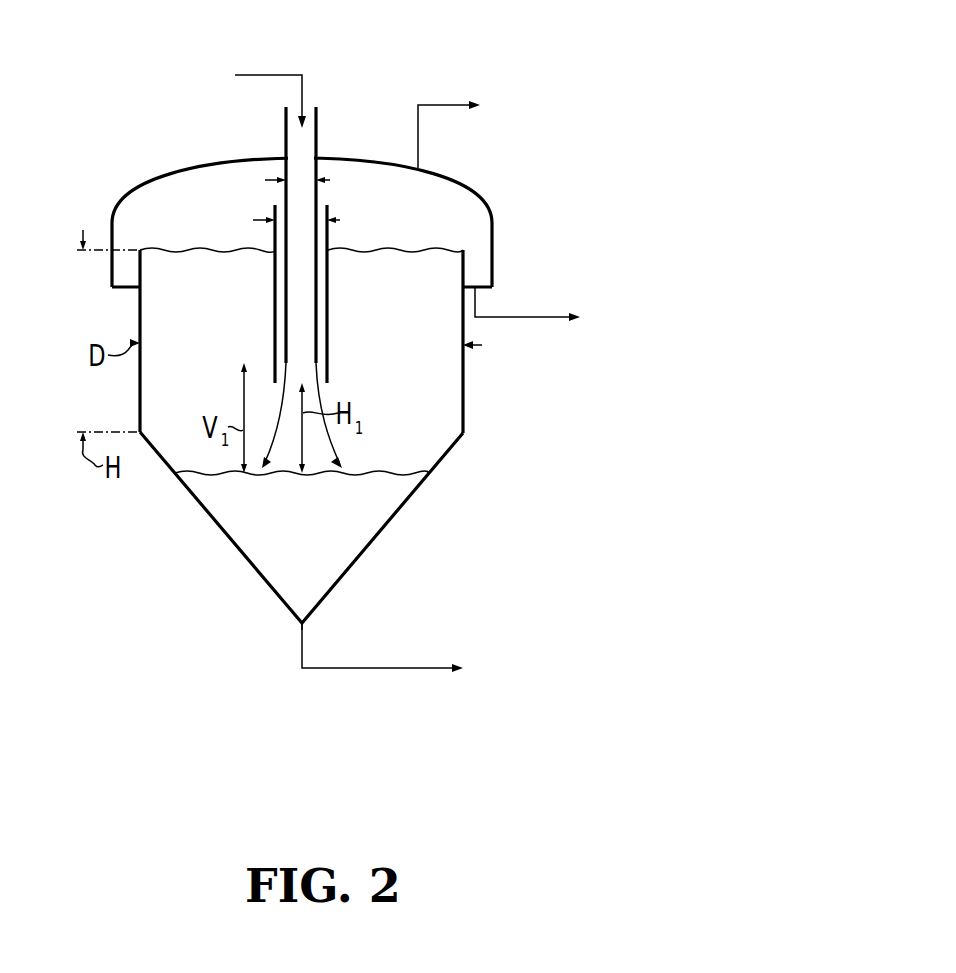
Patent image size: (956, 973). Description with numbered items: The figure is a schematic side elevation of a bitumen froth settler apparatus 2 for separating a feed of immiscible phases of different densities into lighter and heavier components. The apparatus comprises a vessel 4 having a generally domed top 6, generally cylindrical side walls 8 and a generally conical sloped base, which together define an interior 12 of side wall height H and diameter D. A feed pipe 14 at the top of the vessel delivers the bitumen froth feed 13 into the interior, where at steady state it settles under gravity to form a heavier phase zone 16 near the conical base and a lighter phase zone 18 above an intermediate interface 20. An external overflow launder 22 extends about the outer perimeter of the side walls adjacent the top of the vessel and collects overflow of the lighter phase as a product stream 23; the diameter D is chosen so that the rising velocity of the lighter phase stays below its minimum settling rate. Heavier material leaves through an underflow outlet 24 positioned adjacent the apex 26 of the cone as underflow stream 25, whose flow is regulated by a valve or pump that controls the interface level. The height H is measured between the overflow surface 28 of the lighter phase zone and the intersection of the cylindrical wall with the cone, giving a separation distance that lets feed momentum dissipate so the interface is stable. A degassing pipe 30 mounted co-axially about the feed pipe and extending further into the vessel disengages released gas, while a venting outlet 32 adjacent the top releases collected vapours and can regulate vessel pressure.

The apparatus 2 is at (606, 103).
The vessel 4 is at (452, 443).
The top 6 is at (166, 176).
The side walls 8 is at (140, 413).
The interior 12 is at (379, 318).
The feed 13 is at (256, 73).
The feed pipe 14 is at (319, 121).
The heavier phase zone 16 is at (286, 545).
The lighter phase zone 18 is at (196, 400).
The interface 20 is at (397, 471).
The external overflow launder 22 is at (478, 272).
The product stream 23 is at (540, 319).
The underflow outlet 24 is at (305, 625).
The underflow stream 25 is at (375, 670).
The apex 26 is at (330, 180).
The overflow surface 28 is at (196, 251).
The degassing pipe 30 is at (340, 220).
The venting outlet 32 is at (441, 103).